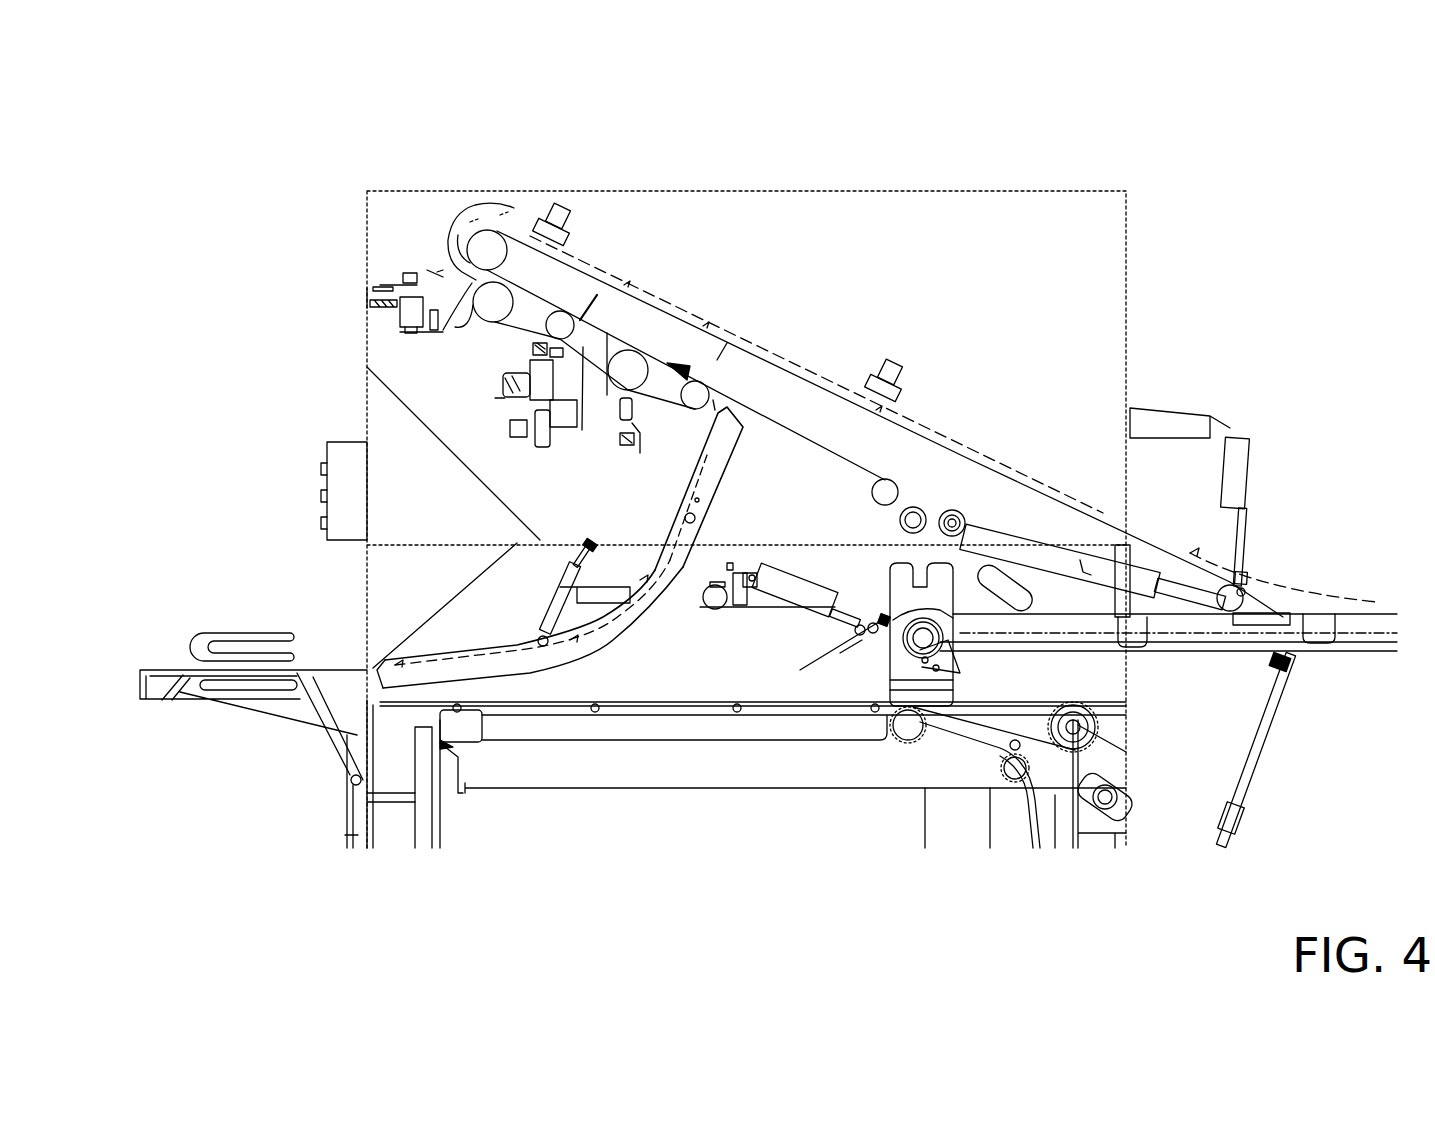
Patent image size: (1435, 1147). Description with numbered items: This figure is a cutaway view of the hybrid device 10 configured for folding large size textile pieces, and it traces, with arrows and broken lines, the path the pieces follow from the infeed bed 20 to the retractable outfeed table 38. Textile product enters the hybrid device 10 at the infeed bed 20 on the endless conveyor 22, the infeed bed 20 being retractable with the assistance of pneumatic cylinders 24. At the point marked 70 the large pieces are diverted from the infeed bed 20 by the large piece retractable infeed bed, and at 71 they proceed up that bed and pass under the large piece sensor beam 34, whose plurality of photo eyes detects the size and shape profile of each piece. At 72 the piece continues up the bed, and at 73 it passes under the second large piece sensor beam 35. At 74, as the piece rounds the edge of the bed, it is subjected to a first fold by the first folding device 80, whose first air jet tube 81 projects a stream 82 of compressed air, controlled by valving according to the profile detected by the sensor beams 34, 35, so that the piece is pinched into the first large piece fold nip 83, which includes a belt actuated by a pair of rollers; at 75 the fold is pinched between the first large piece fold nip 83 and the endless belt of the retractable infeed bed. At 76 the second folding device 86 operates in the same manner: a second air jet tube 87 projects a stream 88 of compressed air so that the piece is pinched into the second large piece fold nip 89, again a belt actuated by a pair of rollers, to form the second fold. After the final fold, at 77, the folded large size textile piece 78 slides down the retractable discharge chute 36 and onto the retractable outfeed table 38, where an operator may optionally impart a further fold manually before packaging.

The hybrid device 10 is at (397, 122).
The infeed bed 20 is at (1398, 672).
The endless conveyor 22 is at (1300, 655).
The pneumatic cylinders 24 is at (1242, 775).
The large piece sensor beam 34 is at (893, 365).
The large piece sensor beam 35 is at (560, 208).
The retractable discharge chute 36 is at (405, 673).
The retractable outfeed table 38 is at (200, 685).
The path reference point 70 is at (1283, 592).
The path reference point 71 is at (1003, 457).
The path reference point 72 is at (740, 338).
The path reference point 73 is at (548, 245).
The path reference point 74 is at (462, 250).
The path reference point 75 is at (598, 335).
The path reference point 76 is at (660, 400).
The path reference point 77 is at (490, 645).
The folded large size textile piece 78 is at (200, 643).
The first folding device 80 is at (398, 228).
The first air jet tube 81 is at (375, 296).
The stream of compressed air 82 is at (437, 270).
The first large piece fold nip 83 is at (500, 312).
The second folding device 86 is at (576, 442).
The second air jet tube 87 is at (525, 403).
The stream of compressed air 88 is at (583, 350).
The second large piece fold nip 89 is at (653, 392).